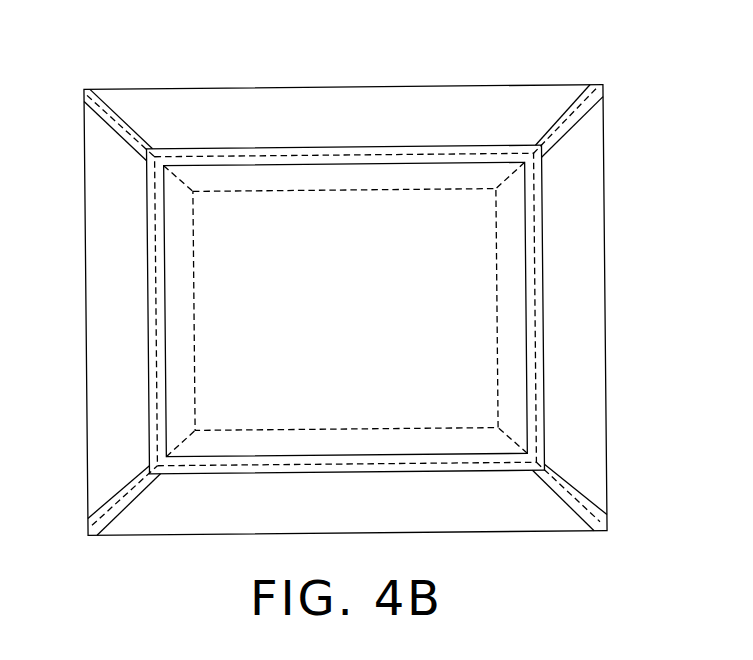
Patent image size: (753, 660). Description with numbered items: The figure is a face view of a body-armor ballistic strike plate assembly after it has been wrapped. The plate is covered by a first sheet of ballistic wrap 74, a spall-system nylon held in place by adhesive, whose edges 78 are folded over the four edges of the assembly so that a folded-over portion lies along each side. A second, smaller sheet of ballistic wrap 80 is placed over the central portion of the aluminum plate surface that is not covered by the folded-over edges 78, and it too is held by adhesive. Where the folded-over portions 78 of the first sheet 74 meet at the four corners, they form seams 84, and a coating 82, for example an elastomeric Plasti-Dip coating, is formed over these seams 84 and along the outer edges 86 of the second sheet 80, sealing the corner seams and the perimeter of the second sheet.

The first sheet of ballistic wrap 74 is at (606, 390).
The edges of the first sheet of ballistic wrap 78 is at (360, 133).
The second sheet of ballistic wrap 80 is at (346, 309).
The coating 82 is at (404, 146).
The seams 84 is at (135, 126).
The outer edges of the second sheet of ballistic wrap 86 is at (282, 151).